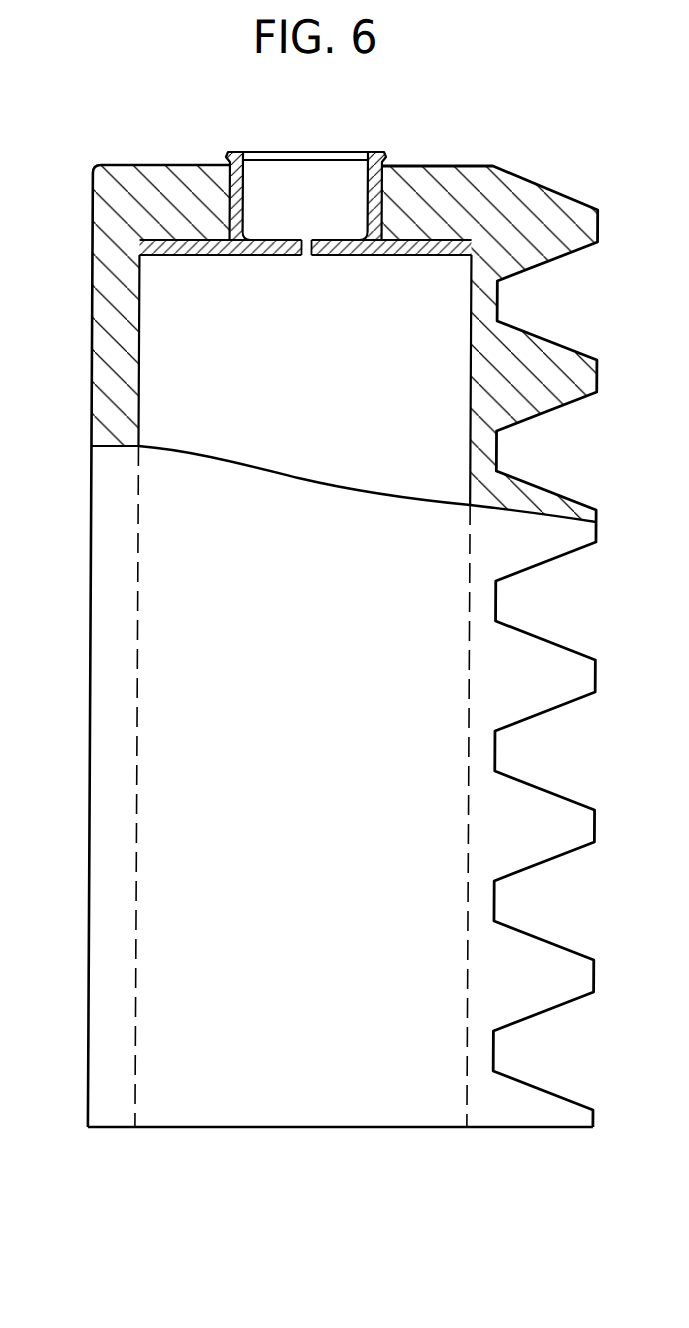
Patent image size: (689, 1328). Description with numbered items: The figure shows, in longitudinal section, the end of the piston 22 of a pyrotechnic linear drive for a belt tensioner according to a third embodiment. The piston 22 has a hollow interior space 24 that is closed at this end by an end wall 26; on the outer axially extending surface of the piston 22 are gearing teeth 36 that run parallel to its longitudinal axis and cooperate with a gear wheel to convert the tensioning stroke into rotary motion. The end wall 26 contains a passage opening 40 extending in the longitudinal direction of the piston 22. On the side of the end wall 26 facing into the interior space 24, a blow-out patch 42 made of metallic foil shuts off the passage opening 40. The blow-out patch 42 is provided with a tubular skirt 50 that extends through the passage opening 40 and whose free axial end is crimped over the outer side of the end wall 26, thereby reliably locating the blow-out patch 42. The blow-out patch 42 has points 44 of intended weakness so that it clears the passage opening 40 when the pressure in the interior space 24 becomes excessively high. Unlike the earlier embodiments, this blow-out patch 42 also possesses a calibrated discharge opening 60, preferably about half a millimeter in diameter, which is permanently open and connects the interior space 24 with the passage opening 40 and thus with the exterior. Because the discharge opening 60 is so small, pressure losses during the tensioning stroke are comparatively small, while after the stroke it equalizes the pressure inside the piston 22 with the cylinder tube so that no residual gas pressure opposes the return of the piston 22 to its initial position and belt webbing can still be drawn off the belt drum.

The piston 22 is at (110, 681).
The hollow interior space 24 is at (165, 381).
The end wall 26 is at (197, 192).
The gearing teeth 36 is at (576, 369).
The passage opening 40 is at (285, 187).
The blow-out patch 42 is at (180, 253).
The points of intended weakness 44 is at (232, 253).
The tubular skirt 50 is at (367, 187).
The calibrated discharge opening 60 is at (305, 255).